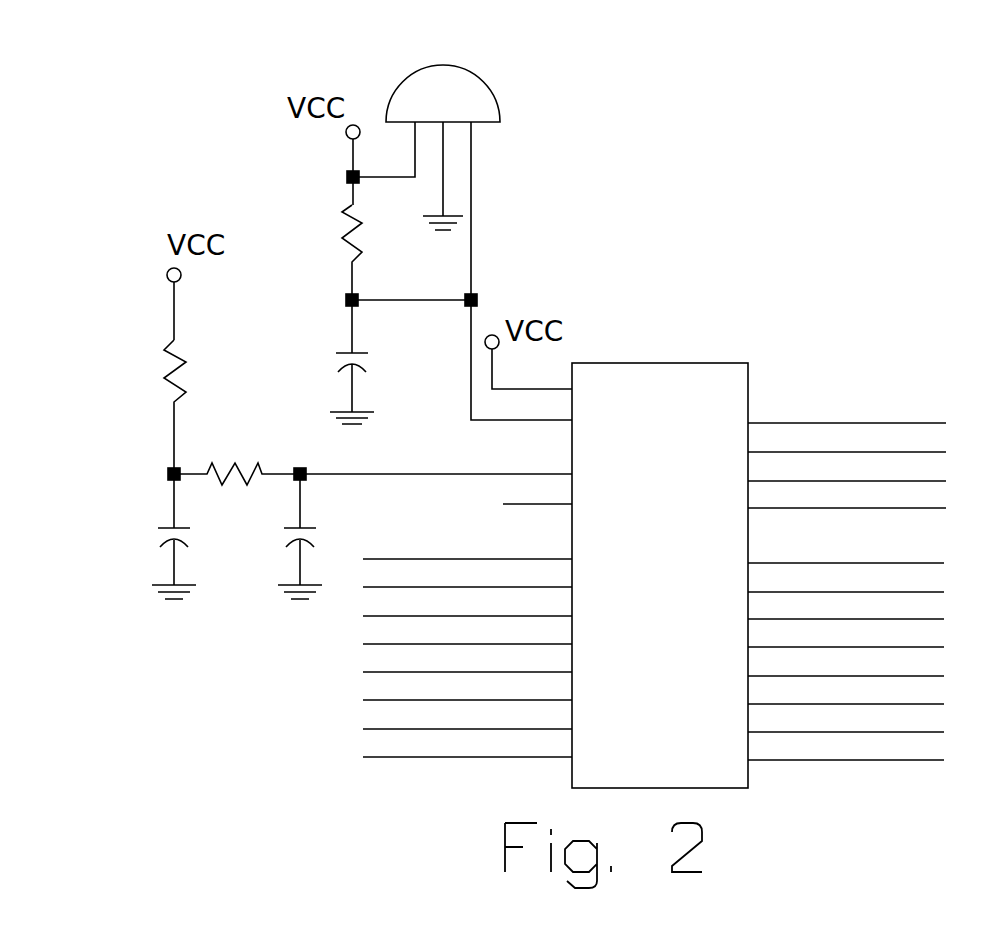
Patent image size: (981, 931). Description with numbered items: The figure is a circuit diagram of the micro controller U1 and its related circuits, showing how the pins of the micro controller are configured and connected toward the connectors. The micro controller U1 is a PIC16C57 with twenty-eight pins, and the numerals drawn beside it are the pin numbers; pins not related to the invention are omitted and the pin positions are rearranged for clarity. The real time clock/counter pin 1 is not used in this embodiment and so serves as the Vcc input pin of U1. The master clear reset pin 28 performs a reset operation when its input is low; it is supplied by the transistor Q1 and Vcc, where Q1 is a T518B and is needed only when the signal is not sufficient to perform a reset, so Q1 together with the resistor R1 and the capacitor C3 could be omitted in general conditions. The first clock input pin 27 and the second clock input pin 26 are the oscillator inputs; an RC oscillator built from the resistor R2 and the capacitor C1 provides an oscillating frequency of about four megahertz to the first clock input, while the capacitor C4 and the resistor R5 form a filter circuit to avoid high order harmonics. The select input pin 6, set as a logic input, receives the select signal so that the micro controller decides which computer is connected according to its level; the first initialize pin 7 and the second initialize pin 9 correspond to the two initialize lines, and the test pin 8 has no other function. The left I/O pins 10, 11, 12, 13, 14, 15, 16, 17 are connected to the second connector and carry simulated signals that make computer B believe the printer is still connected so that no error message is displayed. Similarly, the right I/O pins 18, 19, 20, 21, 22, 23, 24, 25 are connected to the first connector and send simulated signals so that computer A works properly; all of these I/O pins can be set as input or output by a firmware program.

The transistor Q1 is at (462, 224).
The resistor R1 is at (378, 252).
The resistor R2 is at (200, 407).
The resistor R5 is at (237, 454).
The capacitor C1 is at (193, 536).
The capacitor C3 is at (372, 362).
The capacitor C4 is at (316, 536).
The micro controller U1 is at (660, 555).
The RTCC pin 1 is at (562, 377).
The MCLR pin 28 is at (548, 408).
The OSC1 pin 27 is at (436, 464).
The OSC2 pin 26 is at (537, 493).
The RA0 pin 6 is at (847, 410).
The RA1 pin 7 is at (847, 439).
The RA2 pin 8 is at (847, 468).
The RA3 pin 9 is at (847, 495).
The RB0 pin 10 is at (467, 546).
The RB1 pin 11 is at (467, 574).
The RB2 pin 12 is at (467, 603).
The RB3 pin 13 is at (467, 631).
The RB4 pin 14 is at (467, 659).
The RB5 pin 15 is at (467, 687).
The RB6 pin 16 is at (467, 716).
The RB7 pin 17 is at (467, 744).
The RC0 pin 18 is at (846, 550).
The RC1 pin 19 is at (846, 579).
The RC2 pin 20 is at (846, 606).
The RC3 pin 21 is at (846, 634).
The RC4 pin 22 is at (846, 663).
The RC5 pin 23 is at (846, 691).
The RC6 pin 24 is at (846, 719).
The RC7 pin 25 is at (846, 747).